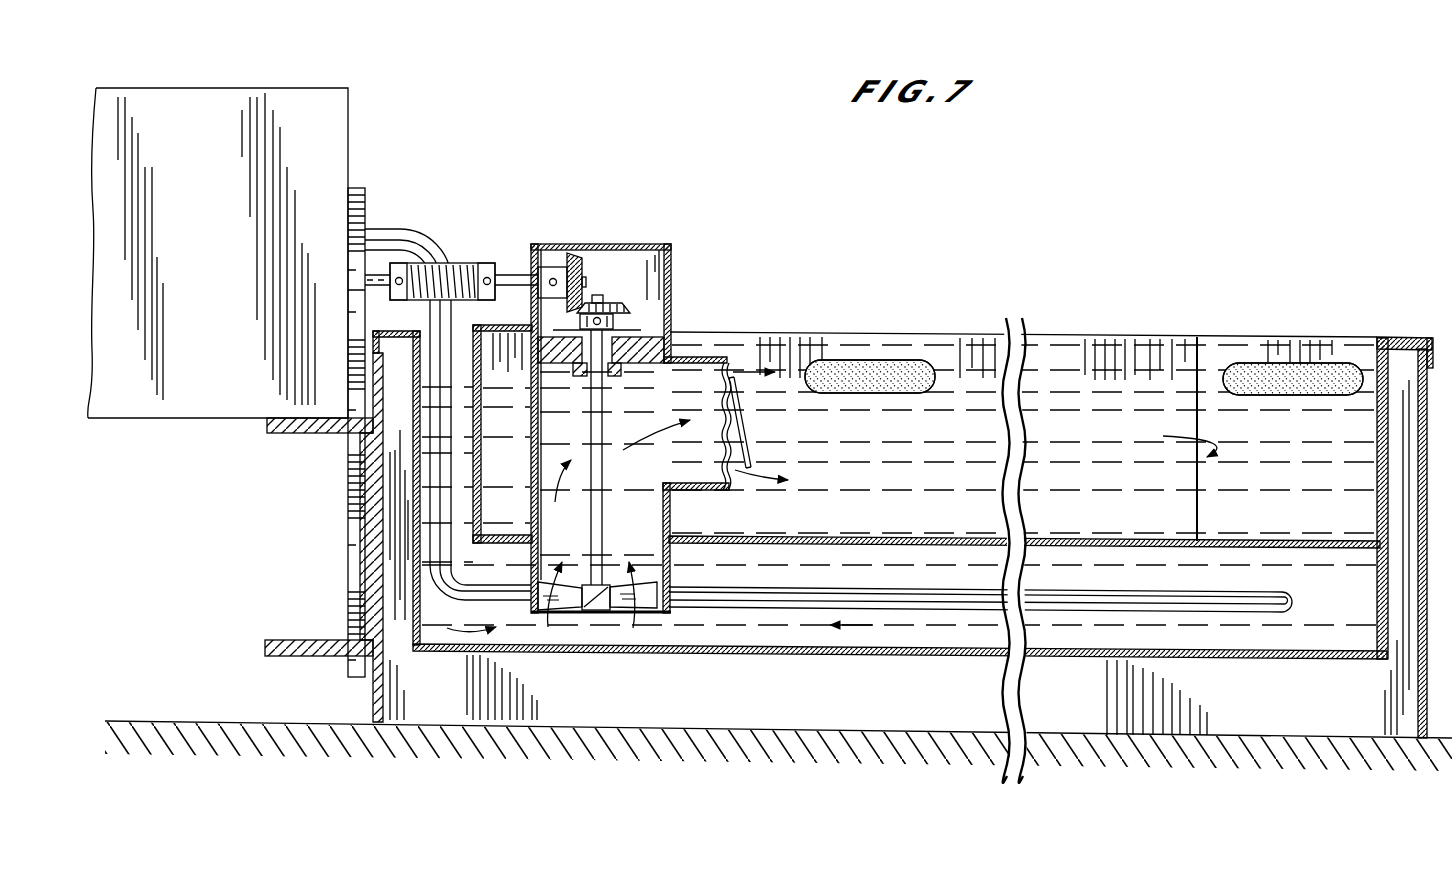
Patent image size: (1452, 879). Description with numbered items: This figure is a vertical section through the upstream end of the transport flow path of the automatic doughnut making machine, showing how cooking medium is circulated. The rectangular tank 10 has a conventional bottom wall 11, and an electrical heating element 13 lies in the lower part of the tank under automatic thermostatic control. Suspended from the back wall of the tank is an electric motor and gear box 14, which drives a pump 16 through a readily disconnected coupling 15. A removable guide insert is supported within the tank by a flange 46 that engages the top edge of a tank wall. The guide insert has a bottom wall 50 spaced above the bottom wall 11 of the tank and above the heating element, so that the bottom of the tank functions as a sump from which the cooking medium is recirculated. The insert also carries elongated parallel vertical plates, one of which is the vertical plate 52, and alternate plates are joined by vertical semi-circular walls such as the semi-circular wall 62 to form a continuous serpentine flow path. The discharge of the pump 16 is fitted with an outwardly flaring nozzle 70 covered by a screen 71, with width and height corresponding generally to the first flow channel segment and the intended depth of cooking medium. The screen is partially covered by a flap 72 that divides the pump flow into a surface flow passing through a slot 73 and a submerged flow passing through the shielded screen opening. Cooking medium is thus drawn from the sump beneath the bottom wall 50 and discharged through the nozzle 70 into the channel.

The tank 10 is at (404, 574).
The bottom wall 11 is at (747, 653).
The electrical heating element 13 is at (898, 605).
The electric motor and gear box 14 is at (240, 110).
The coupling 15 is at (458, 265).
The pump 16 is at (674, 397).
The flange 46 is at (1405, 340).
The bottom wall 50 is at (1160, 548).
The vertical plate 52 is at (1122, 348).
The semi-circular wall 62 is at (1377, 473).
The nozzle 70 is at (687, 358).
The screen 71 is at (727, 473).
The flap 72 is at (743, 440).
The slot 73 is at (728, 368).